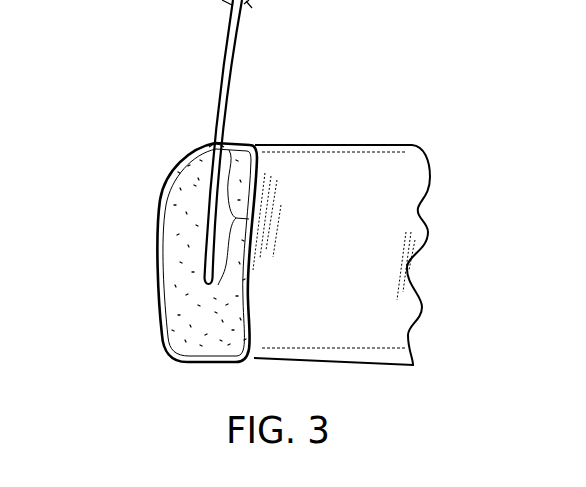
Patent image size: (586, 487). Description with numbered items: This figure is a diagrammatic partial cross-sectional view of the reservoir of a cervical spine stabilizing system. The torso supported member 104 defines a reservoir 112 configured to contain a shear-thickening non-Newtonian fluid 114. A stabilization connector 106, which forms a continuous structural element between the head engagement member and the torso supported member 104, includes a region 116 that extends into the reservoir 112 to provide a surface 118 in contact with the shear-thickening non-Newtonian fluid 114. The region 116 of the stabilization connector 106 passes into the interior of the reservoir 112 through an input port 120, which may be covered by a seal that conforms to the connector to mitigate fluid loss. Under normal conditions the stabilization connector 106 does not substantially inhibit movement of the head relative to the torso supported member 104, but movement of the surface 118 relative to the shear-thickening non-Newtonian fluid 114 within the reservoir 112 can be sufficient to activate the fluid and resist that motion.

The torso supported member 104 is at (325, 137).
The stabilization connector 106 is at (239, 62).
The reservoir 112 is at (185, 178).
The shear-thickening non-Newtonian fluid 114 is at (170, 218).
The region of the stabilization connector 116 is at (249, 219).
The surface 118 is at (205, 266).
The input port 120 is at (217, 143).